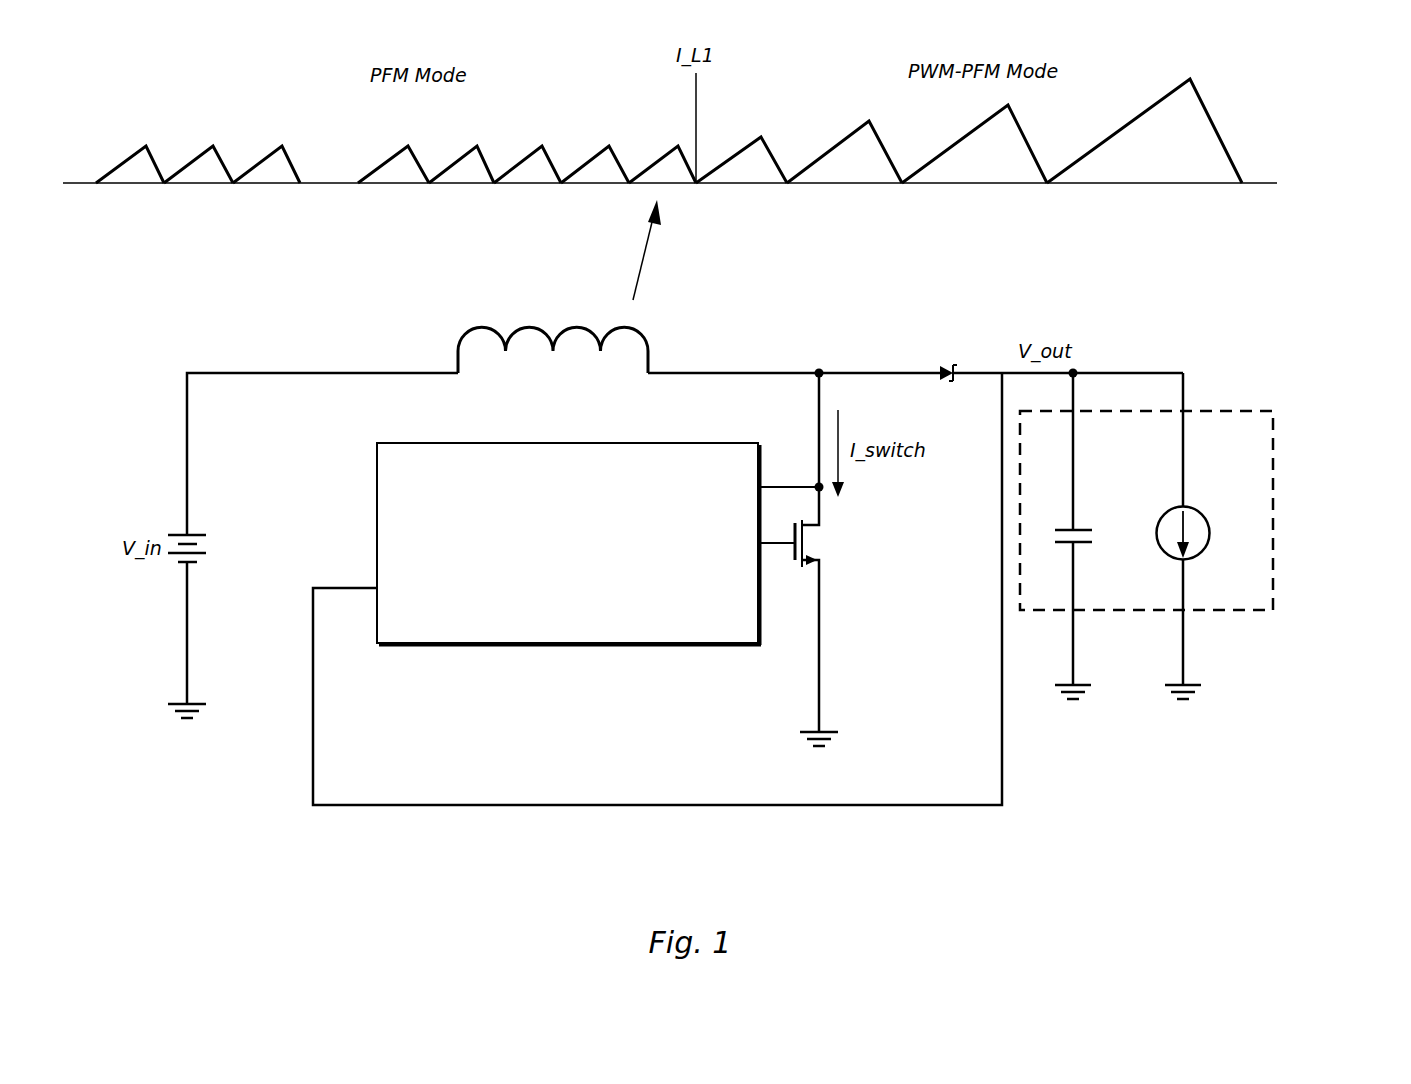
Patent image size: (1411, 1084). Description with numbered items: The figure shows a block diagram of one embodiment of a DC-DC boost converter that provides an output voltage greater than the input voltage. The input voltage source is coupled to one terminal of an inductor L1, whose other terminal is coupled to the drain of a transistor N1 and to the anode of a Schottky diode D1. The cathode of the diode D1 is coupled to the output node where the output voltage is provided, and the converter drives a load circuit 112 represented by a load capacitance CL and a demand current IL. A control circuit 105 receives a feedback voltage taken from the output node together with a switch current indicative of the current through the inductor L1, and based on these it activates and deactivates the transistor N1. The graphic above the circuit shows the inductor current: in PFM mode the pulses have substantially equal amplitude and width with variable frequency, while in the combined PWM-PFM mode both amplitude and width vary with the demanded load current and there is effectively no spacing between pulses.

The control circuit 105 is at (552, 566).
The load circuit 112 is at (1215, 522).
The inductor L1 is at (553, 338).
The transistor N1 is at (823, 543).
The diode D1 is at (949, 360).
The load capacitance CL is at (1089, 529).
The demand current IL is at (1199, 529).